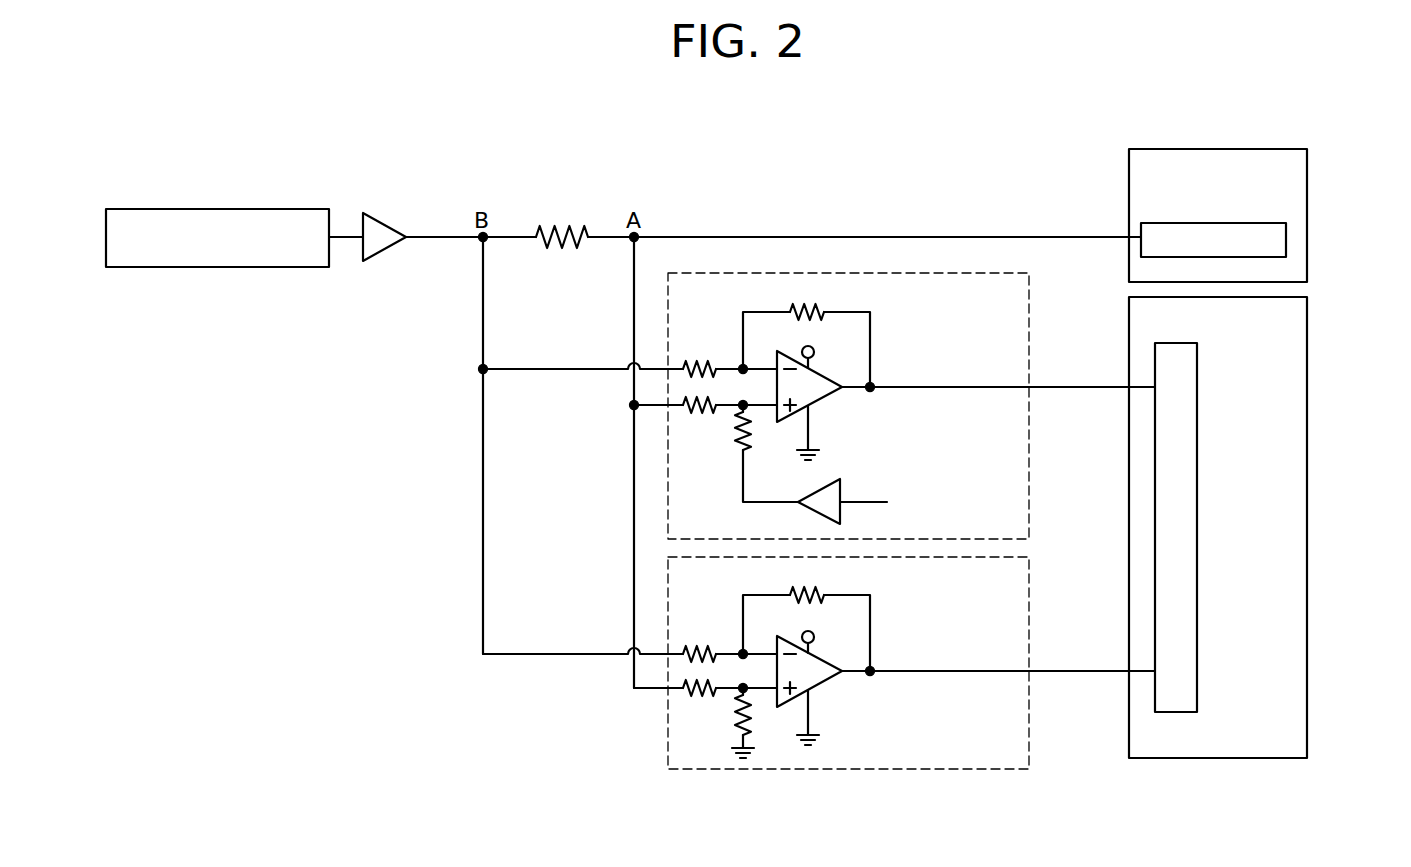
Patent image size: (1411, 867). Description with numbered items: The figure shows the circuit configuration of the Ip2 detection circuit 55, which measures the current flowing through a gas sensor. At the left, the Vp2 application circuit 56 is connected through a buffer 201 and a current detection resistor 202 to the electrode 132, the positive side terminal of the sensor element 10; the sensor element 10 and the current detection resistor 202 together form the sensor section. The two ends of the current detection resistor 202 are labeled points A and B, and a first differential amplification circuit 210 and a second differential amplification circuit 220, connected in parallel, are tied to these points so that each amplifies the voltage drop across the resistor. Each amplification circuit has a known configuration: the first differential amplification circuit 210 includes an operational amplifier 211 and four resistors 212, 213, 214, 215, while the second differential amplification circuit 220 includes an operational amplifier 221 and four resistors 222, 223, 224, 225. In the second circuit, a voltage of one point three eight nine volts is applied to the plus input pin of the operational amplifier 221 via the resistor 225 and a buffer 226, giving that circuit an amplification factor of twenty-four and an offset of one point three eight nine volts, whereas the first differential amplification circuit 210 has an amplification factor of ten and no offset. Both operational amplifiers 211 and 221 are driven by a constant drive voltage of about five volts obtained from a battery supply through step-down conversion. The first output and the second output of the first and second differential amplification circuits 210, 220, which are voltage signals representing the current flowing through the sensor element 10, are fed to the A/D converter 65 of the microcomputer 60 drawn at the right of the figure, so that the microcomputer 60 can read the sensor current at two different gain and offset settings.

The sensor element 10 is at (1272, 149).
The electrode 132 is at (1286, 243).
The Ip2 detection circuit 55 is at (712, 203).
The Vp2 application circuit 56 is at (301, 192).
The microcomputer 60 is at (1307, 452).
The A/D converter 65 is at (1175, 712).
The buffer 201 is at (384, 222).
The current detection resistor 202 is at (575, 226).
The first differential amplification circuit 210 is at (1033, 583).
The operational amplifier 211 is at (828, 662).
The resistor 212 is at (700, 646).
The resistor 213 is at (823, 589).
The resistor 214 is at (695, 697).
The resistor 215 is at (748, 737).
The second differential amplification circuit 220 is at (1033, 297).
The operational amplifier 221 is at (828, 378).
The resistor 222 is at (700, 362).
The resistor 223 is at (823, 306).
The resistor 224 is at (695, 413).
The resistor 225 is at (745, 452).
The buffer 226 is at (840, 490).